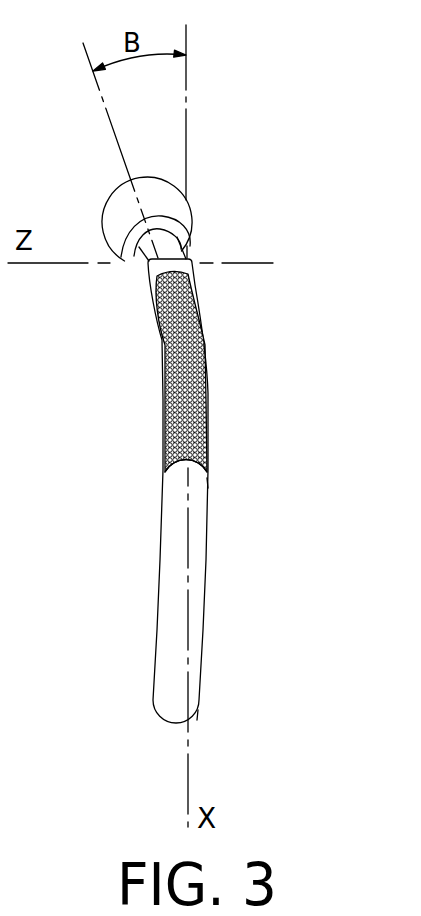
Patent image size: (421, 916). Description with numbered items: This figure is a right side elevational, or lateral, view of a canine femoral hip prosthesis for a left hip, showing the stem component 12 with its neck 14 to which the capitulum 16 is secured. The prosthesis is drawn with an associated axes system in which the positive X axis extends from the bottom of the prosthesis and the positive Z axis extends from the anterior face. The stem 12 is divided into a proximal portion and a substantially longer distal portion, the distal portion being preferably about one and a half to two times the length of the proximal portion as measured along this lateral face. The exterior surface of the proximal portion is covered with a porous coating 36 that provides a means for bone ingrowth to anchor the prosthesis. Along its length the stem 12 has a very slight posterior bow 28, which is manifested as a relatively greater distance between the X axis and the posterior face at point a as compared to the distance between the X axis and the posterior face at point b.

The stem component 12 is at (150, 587).
The neck 14 is at (132, 266).
The capitulum 16 is at (109, 199).
The posterior bow 28 is at (216, 474).
The porous coating 36 is at (209, 382).
The point a is at (206, 483).
The point b is at (197, 717).